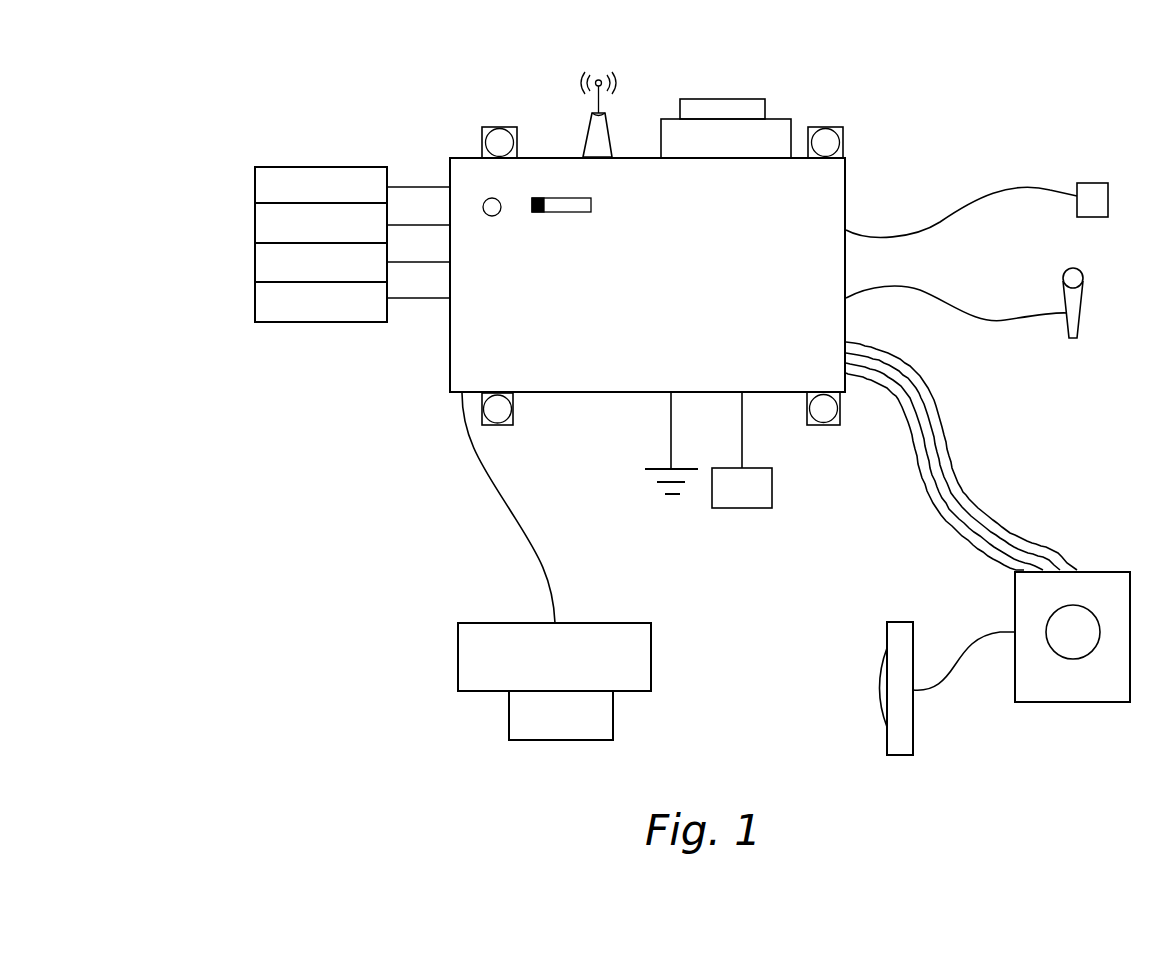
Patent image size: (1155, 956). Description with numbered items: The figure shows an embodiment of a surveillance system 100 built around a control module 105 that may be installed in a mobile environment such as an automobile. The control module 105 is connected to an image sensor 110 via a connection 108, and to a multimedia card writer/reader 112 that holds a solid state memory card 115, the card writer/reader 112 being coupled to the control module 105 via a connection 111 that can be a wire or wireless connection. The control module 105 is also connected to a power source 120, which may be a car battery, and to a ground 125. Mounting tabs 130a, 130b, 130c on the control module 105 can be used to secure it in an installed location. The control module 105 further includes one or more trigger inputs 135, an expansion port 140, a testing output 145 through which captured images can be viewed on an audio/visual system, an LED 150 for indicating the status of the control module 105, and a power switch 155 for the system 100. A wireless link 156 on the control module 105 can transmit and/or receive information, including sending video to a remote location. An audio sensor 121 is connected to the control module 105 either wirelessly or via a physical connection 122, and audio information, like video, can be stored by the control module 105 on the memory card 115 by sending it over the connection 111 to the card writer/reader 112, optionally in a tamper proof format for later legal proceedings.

The surveillance system 100 is at (353, 515).
The control module 105 is at (749, 320).
The connection 108 is at (957, 483).
The image sensor 110 is at (968, 729).
The connection 111 is at (530, 537).
The multimedia card writer/reader 112 is at (573, 671).
The solid state memory card 115 is at (580, 725).
The power source 120 is at (749, 508).
The audio sensor 121 is at (1083, 295).
The physical connection 122 is at (980, 320).
The ground 125 is at (641, 480).
The mounting tab 130a is at (820, 425).
The mounting tab 130b is at (497, 425).
The mounting tab 130c is at (500, 127).
The trigger inputs 135 is at (323, 167).
The expansion port 140 is at (745, 153).
The testing output 145 is at (1100, 183).
The LED 150 is at (492, 216).
The power switch 155 is at (555, 212).
The wireless link 156 is at (607, 79).